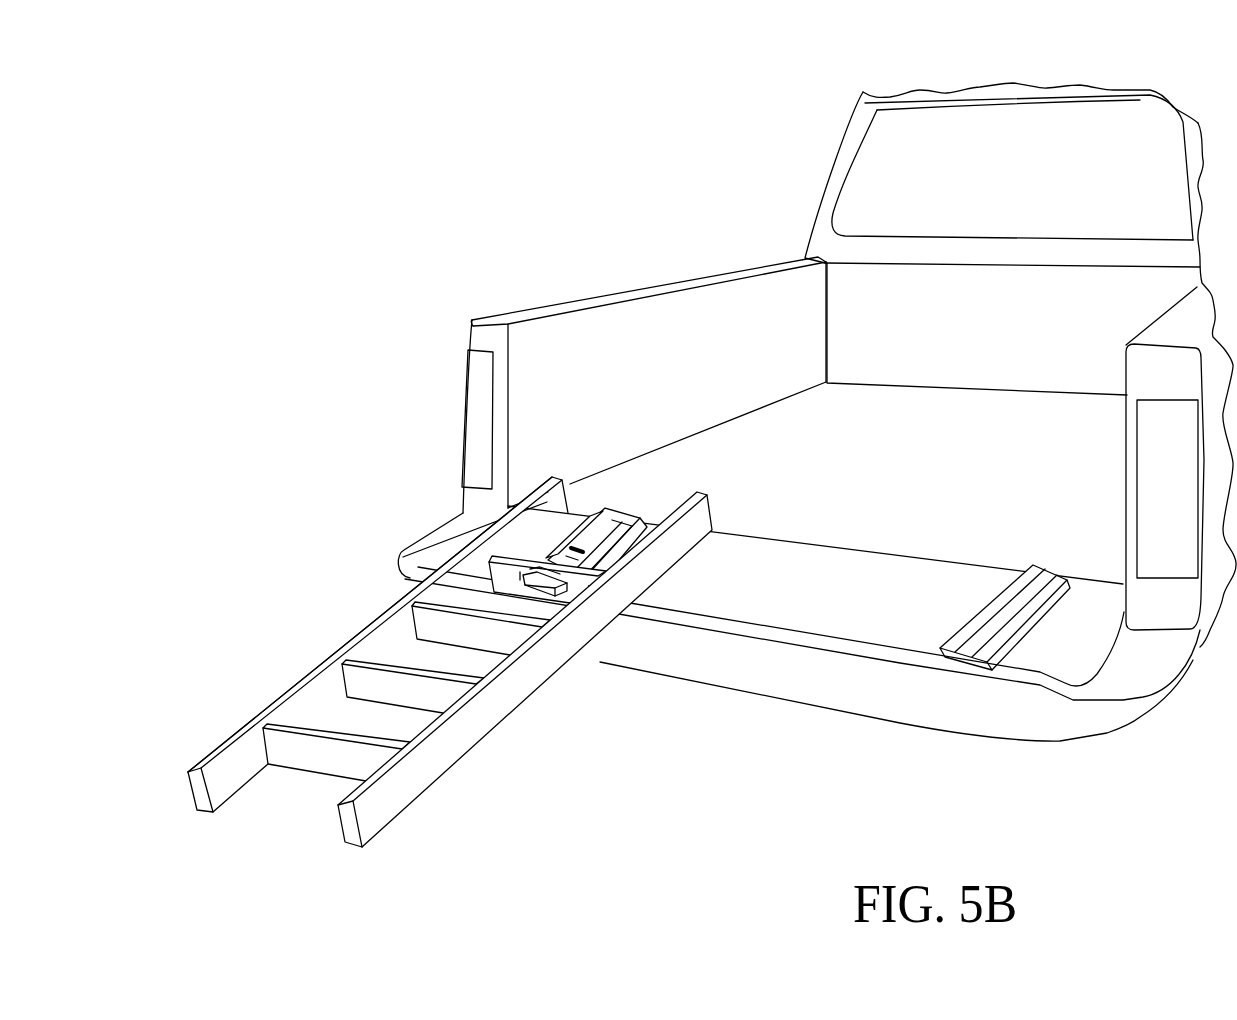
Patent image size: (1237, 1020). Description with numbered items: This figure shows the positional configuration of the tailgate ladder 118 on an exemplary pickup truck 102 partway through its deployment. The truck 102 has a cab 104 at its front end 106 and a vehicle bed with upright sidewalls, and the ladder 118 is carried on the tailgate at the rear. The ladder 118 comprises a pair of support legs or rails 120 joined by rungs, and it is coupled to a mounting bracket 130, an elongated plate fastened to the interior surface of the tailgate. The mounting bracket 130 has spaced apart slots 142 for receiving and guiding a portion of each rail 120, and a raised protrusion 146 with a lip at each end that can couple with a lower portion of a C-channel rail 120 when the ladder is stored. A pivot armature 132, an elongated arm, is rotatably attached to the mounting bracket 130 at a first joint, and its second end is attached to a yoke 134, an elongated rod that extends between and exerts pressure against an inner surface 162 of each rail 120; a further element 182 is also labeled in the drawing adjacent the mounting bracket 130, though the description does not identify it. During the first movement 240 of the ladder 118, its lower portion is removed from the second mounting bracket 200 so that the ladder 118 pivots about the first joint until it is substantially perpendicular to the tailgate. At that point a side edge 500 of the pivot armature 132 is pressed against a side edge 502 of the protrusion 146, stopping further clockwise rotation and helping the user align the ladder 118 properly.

The pickup truck 102 is at (1037, 656).
The cab 104 is at (708, 244).
The front end 106 is at (757, 353).
The ladder 118 is at (450, 665).
The rail 120 is at (377, 652).
The mounting bracket 130 is at (625, 520).
The pivot armature 132 is at (572, 577).
The yoke 134 is at (487, 558).
The slots 142 is at (243, 700).
The raised protrusion 146 is at (497, 585).
The inner surface 162 is at (605, 540).
The pin 182 is at (603, 525).
The second mounting bracket 200 is at (1015, 573).
The first movement 240 is at (594, 762).
The side edge of the pivot armature 500 is at (598, 545).
The side edge of the protrusion 502 is at (560, 555).